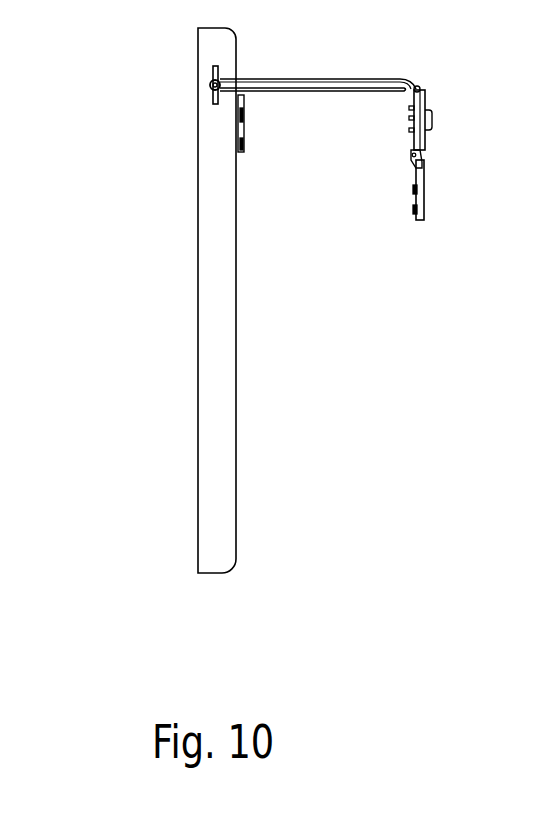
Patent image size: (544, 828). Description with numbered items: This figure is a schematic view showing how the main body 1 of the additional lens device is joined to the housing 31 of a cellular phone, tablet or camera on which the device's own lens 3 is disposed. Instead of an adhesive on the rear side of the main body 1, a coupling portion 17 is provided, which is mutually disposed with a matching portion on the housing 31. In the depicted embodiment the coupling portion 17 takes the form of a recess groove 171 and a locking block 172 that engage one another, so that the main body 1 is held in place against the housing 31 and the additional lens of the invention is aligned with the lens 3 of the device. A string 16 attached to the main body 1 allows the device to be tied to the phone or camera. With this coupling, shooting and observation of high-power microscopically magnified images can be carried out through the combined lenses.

The main body 1 is at (425, 155).
The lens 3 is at (231, 300).
The string 16 is at (333, 79).
The coupling portion 17 is at (285, 167).
The housing 31 is at (197, 112).
The recess groove 171 is at (245, 112).
The locking block 172 is at (410, 135).